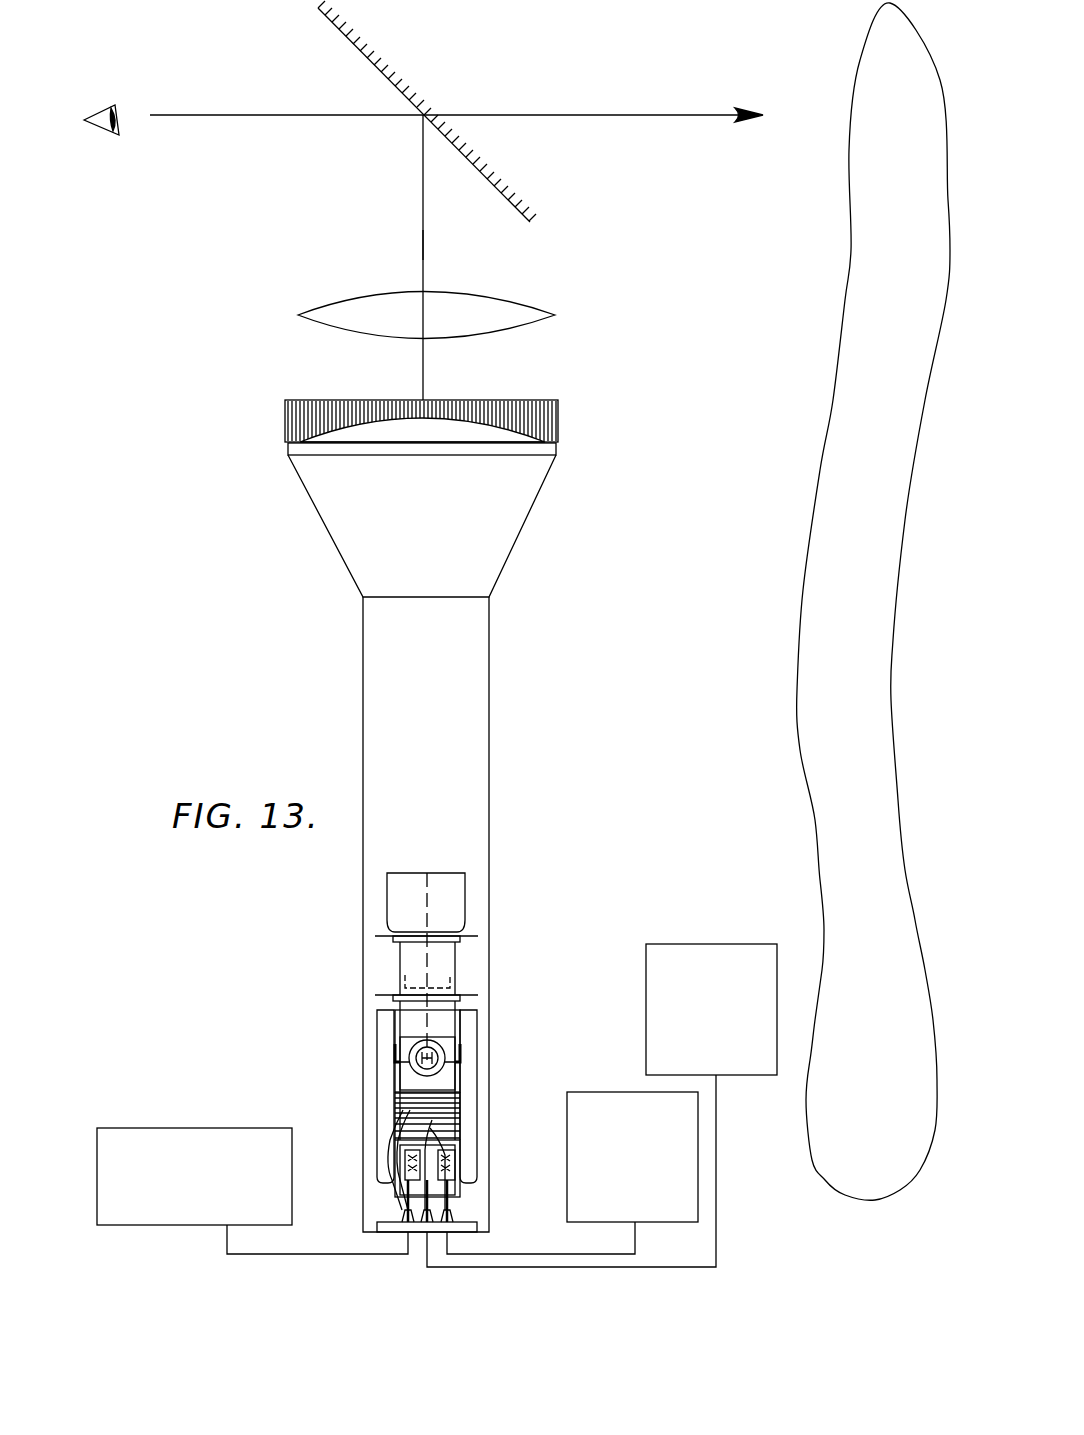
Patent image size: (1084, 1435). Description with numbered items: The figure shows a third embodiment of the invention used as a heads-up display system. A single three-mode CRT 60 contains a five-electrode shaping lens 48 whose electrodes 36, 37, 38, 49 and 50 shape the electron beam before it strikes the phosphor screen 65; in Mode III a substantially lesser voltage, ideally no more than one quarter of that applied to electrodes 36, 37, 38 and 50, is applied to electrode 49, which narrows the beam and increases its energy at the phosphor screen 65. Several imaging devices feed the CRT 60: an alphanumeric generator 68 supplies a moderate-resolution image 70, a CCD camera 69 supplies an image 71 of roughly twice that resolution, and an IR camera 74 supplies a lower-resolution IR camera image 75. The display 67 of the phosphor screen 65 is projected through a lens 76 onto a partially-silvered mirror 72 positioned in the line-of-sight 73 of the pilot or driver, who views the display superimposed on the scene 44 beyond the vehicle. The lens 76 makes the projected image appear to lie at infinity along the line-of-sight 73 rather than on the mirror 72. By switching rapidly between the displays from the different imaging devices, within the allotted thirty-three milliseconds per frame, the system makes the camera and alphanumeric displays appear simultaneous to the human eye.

The electrode 36 is at (395, 1142).
The electrode 37 is at (436, 1125).
The electrode 38 is at (400, 1118).
The scene 44 is at (871, 538).
The five-electrode shaping lens 48 is at (471, 1087).
The electrode 49 is at (460, 1108).
The electrode 50 is at (397, 1101).
The CRT 60 is at (490, 768).
The phosphor screen 65 is at (487, 400).
The display 67 is at (420, 246).
The alphanumeric generator 68 is at (203, 1217).
The CCD camera 69 is at (646, 1210).
The image 70 is at (330, 1246).
The image 71 is at (532, 1254).
The partially-silvered mirror 72 is at (403, 82).
The line-of-sight 73 is at (245, 117).
The IR camera 74 is at (695, 1060).
The IR camera image 75 is at (718, 1172).
The lens 76 is at (515, 298).